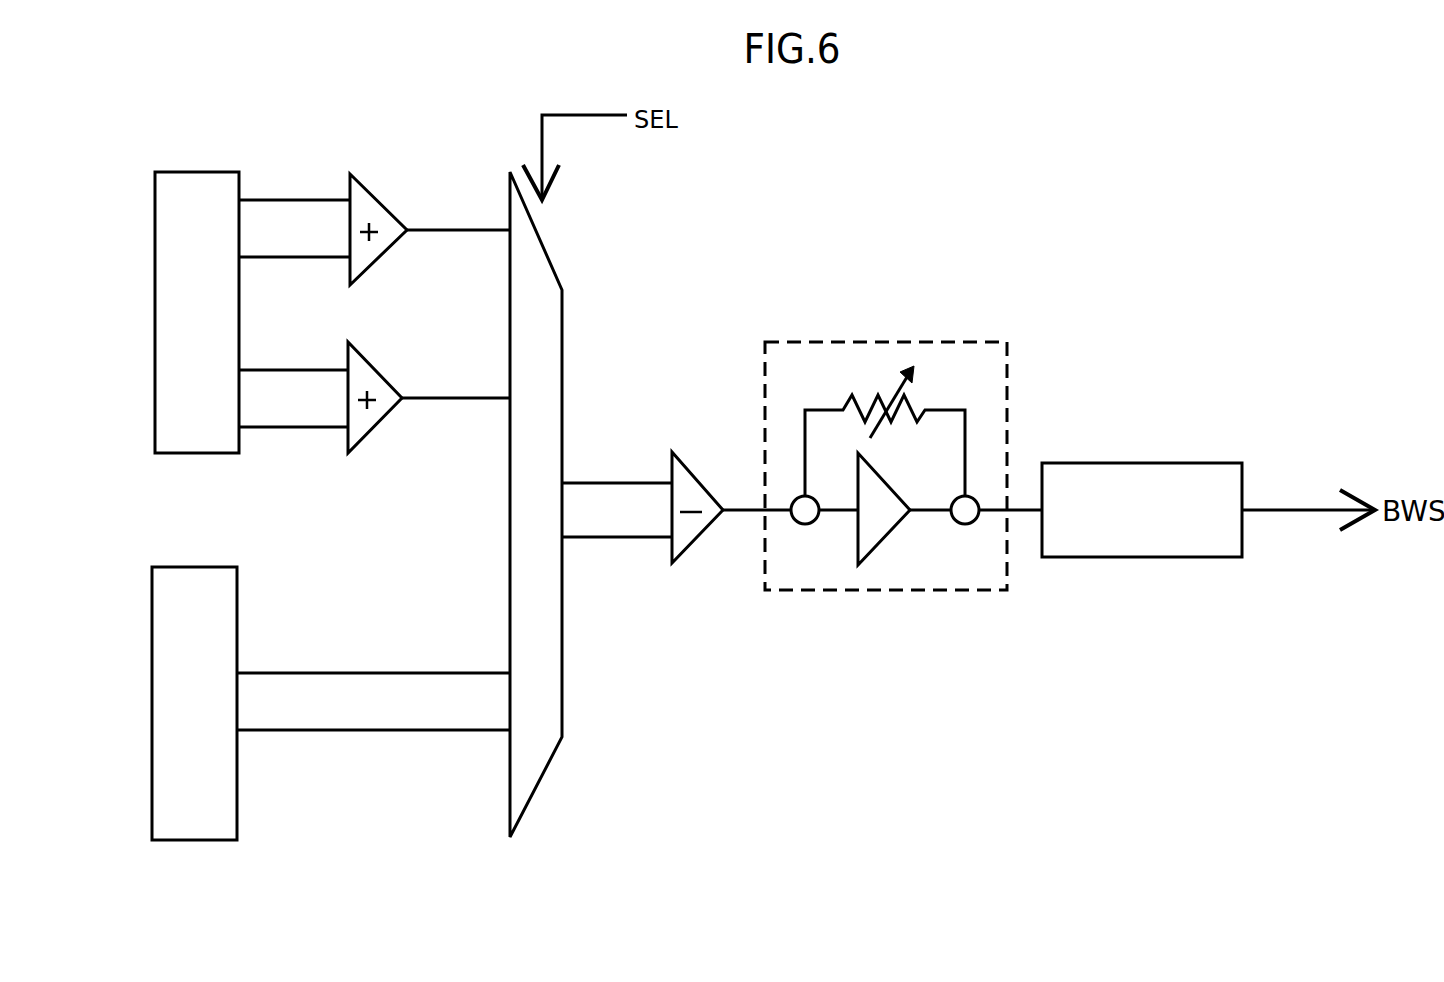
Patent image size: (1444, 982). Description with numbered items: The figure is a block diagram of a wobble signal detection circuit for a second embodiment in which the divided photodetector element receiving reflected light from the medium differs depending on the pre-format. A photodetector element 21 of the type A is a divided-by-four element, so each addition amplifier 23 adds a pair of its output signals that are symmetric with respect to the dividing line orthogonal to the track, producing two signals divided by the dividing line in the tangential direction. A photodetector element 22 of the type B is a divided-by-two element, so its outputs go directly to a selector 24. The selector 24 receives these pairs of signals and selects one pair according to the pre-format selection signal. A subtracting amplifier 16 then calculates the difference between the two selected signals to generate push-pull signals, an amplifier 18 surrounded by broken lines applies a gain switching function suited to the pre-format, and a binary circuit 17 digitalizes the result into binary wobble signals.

The subtracting amplifier 16 is at (690, 467).
The binary circuit 17 is at (1128, 558).
The amplifier 18 is at (885, 592).
The photodetector element 21 is at (238, 172).
The photodetector element 22 is at (230, 566).
The addition amplifier 23 is at (378, 196).
The selector 24 is at (558, 746).